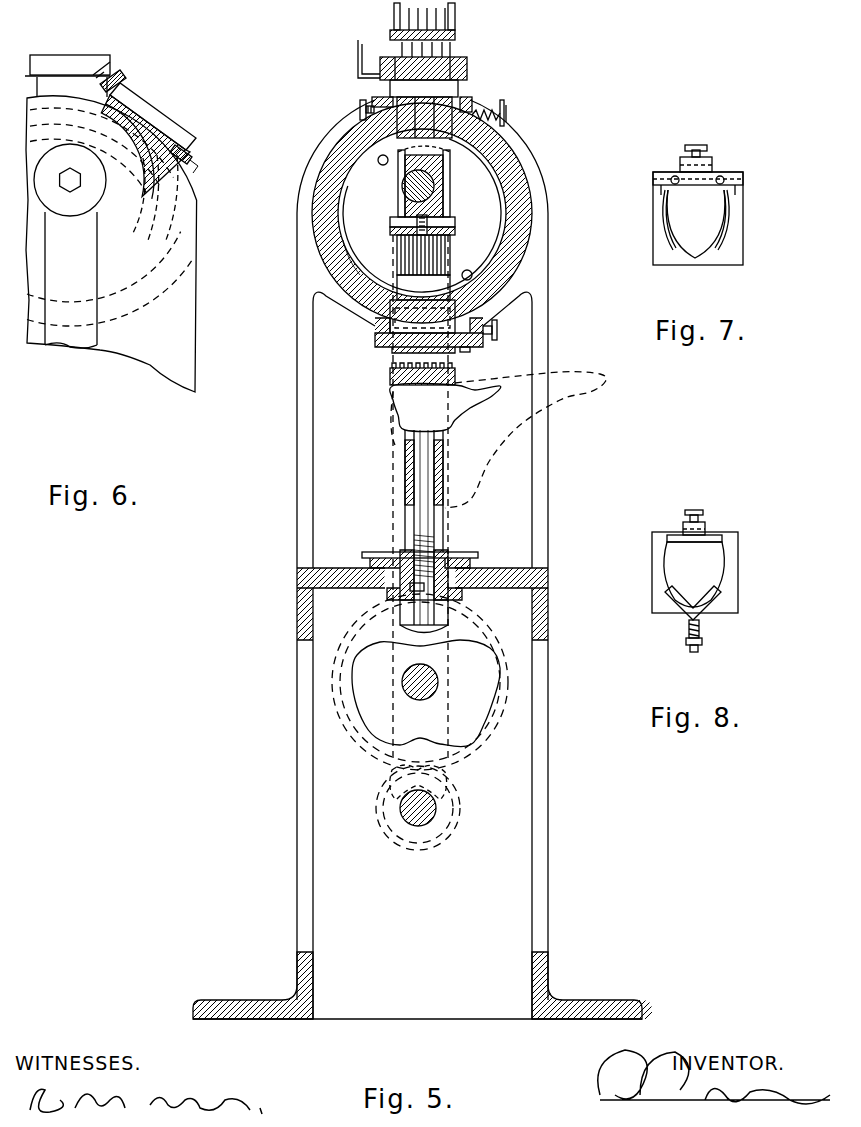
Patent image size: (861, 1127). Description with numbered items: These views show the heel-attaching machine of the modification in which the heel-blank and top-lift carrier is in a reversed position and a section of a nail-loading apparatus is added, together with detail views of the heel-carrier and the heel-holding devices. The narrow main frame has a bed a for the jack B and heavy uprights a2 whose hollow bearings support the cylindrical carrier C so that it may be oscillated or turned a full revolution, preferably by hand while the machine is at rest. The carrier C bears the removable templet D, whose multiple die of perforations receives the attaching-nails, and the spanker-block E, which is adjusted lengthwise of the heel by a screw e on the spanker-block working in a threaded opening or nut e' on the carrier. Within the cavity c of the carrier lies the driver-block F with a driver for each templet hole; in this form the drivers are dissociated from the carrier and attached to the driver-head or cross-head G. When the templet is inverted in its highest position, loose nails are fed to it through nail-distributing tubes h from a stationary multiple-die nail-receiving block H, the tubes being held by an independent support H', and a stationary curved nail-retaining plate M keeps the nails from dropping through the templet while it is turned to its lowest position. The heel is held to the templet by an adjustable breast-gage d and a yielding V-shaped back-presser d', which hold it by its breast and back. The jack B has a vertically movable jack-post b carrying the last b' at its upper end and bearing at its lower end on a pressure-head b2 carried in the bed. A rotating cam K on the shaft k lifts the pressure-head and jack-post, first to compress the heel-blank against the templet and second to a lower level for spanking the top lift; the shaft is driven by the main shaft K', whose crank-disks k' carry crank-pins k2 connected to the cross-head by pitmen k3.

In FIG. 5, the bed a is at (497, 569).
In FIG. 6, the uprights a2 is at (110, 217).
In FIG. 5, the carrier C is at (520, 243).
In FIG. 6, the carrier C is at (170, 229).
In FIG. 5, the cavity c is at (351, 257).
In FIG. 5, the nail-retaining plate M is at (505, 200).
In FIG. 5, the templet D is at (445, 112).
In FIG. 8, the templet D is at (738, 569).
In FIG. 5, the breast-gage d is at (360, 97).
In FIG. 6, the breast-gage d is at (117, 79).
In FIG. 8, the breast-gage d is at (701, 521).
In FIG. 5, the back-presser d' is at (497, 103).
In FIG. 6, the back-presser d' is at (161, 141).
In FIG. 8, the back-presser d' is at (698, 619).
In FIG. 5, the nail-receiving block H is at (431, 60).
In FIG. 6, the nail-receiving block H is at (83, 76).
In FIG. 5, the independent support H' is at (445, 31).
In FIG. 5, the nail-distributing tubes h is at (392, 22).
In FIG. 5, the driver-head G is at (443, 205).
In FIG. 5, the pin i is at (383, 166).
In FIG. 5, the driver-block F is at (455, 233).
In FIG. 5, the adjusting-screw e is at (448, 294).
In FIG. 5, the nut e' is at (483, 359).
In FIG. 7, the nut e' is at (697, 145).
In FIG. 7, the spanker-block E is at (743, 225).
In FIG. 5, the last b' is at (498, 435).
In FIG. 5, the jack B is at (405, 482).
In FIG. 5, the jack-post b is at (438, 527).
In FIG. 5, the pressure-head b2 is at (450, 622).
In FIG. 5, the cam K is at (426, 693).
In FIG. 5, the cam-shaft k is at (420, 699).
In FIG. 5, the pitmen k3 is at (392, 628).
In FIG. 6, the pitmen k3 is at (70, 246).
In FIG. 5, the main shaft K' is at (438, 808).
In FIG. 5, the crank-disks k' is at (423, 833).
In FIG. 5, the crank-pins k2 is at (422, 782).